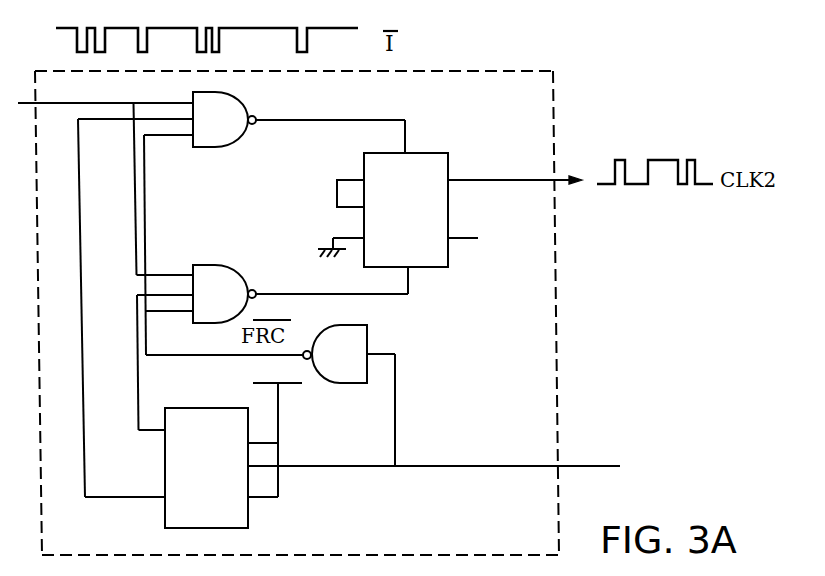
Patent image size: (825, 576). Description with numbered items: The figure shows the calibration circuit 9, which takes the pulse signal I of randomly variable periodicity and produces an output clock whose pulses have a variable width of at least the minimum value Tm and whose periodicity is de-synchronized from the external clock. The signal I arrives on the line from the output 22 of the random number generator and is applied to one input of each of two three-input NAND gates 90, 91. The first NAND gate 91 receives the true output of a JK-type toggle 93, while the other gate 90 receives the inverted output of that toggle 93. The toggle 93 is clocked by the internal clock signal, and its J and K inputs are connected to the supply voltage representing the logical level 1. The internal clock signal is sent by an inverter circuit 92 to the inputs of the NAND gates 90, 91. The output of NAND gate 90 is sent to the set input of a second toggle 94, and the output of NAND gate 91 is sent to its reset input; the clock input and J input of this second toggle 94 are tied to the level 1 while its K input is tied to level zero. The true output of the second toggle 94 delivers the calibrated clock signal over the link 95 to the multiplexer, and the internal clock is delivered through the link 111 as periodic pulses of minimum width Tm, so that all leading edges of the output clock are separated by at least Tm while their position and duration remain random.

The calibration circuit 9 is at (559, 399).
The output of the random number generator 22 is at (97, 103).
The first NAND gate 90 is at (220, 147).
The second NAND gate 91 is at (230, 265).
The inverter circuit 92 is at (367, 331).
The JK toggle 93 is at (209, 408).
The second logical toggle 94 is at (450, 267).
The link 95 is at (514, 180).
The link 111 is at (573, 468).
The logical level one 1 is at (335, 195).